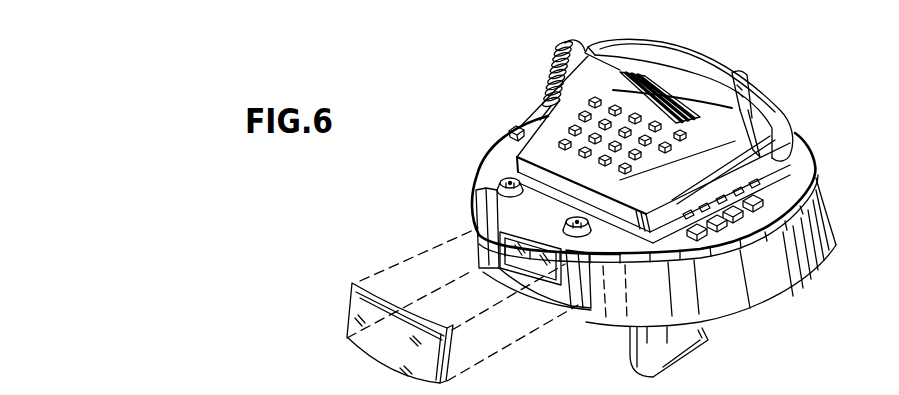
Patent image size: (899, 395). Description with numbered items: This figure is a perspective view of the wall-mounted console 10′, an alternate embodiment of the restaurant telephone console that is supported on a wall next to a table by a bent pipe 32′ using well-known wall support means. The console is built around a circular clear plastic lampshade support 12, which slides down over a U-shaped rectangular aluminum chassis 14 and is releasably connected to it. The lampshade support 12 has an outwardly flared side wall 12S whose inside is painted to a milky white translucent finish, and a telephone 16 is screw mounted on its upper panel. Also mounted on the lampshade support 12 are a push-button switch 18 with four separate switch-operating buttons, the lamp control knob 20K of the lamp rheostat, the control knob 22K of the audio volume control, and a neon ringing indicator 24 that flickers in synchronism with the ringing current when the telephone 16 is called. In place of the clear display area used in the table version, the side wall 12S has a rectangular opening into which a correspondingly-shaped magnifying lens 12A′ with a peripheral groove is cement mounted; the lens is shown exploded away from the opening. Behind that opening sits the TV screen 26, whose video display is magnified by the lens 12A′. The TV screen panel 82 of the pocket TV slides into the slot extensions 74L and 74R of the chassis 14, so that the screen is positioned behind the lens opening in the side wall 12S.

The console 10′ is at (684, 44).
The lampshade support 12 is at (748, 310).
The side wall 12S is at (828, 258).
The magnifying lens 12A′ is at (362, 338).
The chassis 14 is at (482, 223).
The telephone 16 is at (737, 80).
The push-button switch 18 is at (738, 237).
The lamp control knob 20K is at (585, 233).
The control knob 22K is at (503, 183).
The neon ringing indicator 24 is at (513, 126).
The TV screen 26 is at (512, 281).
The bent pipe 32′ is at (627, 356).
The slot extension 74L is at (490, 260).
The slot extension 74R is at (580, 301).
The TV screen panel 82 is at (567, 250).